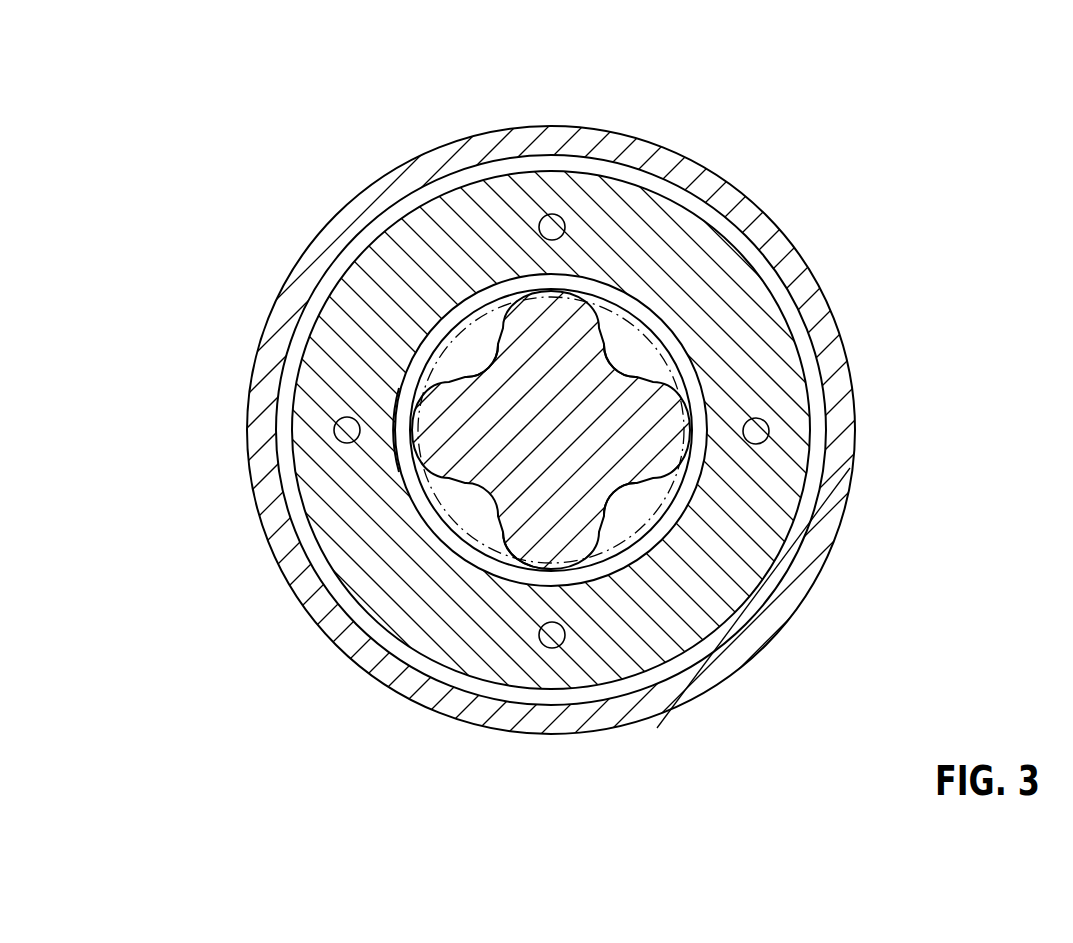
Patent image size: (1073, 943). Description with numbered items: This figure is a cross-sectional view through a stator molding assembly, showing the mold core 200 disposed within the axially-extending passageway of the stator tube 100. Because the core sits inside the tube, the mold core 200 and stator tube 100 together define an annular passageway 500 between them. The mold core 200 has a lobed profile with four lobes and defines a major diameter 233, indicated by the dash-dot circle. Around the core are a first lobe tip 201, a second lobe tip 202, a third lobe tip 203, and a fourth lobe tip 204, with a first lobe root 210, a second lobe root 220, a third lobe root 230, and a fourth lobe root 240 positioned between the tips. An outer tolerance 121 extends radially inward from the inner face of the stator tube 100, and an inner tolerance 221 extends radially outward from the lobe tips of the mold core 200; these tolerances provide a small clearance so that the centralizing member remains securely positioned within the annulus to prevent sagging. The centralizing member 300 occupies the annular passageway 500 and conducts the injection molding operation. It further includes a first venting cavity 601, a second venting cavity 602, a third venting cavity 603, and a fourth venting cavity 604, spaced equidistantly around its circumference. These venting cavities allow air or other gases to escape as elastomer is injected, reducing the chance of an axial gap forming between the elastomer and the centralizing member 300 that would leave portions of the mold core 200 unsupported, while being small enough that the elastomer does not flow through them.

The stator tube 100 is at (685, 168).
The outer tolerance 121 is at (703, 653).
The mold core 200 is at (293, 592).
The first lobe tip 201 is at (556, 292).
The second lobe tip 202 is at (551, 568).
The third lobe tip 203 is at (703, 423).
The fourth lobe tip 204 is at (400, 417).
The first lobe root 210 is at (652, 330).
The second lobe root 220 is at (613, 493).
The inner tolerance 221 is at (613, 367).
The third lobe root 230 is at (340, 647).
The major diameter 233 is at (496, 296).
The fourth lobe root 240 is at (482, 376).
The centralizing member 300 is at (686, 243).
The annular passageway 500 is at (450, 458).
The first venting cavity 601 is at (553, 227).
The second venting cavity 602 is at (756, 431).
The third venting cavity 603 is at (552, 635).
The fourth venting cavity 604 is at (347, 431).